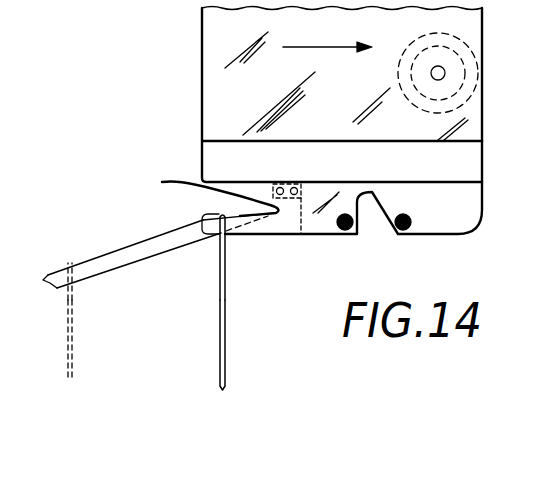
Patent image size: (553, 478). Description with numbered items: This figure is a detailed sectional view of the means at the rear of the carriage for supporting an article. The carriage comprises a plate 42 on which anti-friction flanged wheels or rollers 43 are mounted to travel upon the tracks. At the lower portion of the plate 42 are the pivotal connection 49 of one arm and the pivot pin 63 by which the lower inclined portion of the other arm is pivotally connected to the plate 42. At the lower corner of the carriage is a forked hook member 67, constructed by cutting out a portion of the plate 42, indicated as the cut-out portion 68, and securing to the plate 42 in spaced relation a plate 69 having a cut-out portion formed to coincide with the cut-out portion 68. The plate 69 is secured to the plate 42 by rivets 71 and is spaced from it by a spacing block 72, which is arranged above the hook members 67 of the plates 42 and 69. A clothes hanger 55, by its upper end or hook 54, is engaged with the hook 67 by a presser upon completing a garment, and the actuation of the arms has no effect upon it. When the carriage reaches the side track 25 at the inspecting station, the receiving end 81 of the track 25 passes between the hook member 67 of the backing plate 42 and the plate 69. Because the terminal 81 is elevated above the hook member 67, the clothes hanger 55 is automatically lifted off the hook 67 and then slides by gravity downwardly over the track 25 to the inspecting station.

The side track 25 is at (113, 257).
The plate 42 is at (213, 101).
The anti-friction flanged wheels or rollers 43 is at (466, 43).
The pivotal connection 49 is at (406, 231).
The hook 54 is at (221, 263).
The clothes hanger 55 is at (220, 315).
The pivot pin 63 is at (347, 231).
The hook member 67 is at (203, 219).
The cut-out portion 68 is at (206, 194).
The plate 69 is at (300, 204).
The rivets 71 is at (294, 187).
The spacing block 72 is at (303, 201).
The receiving end 81 is at (283, 203).